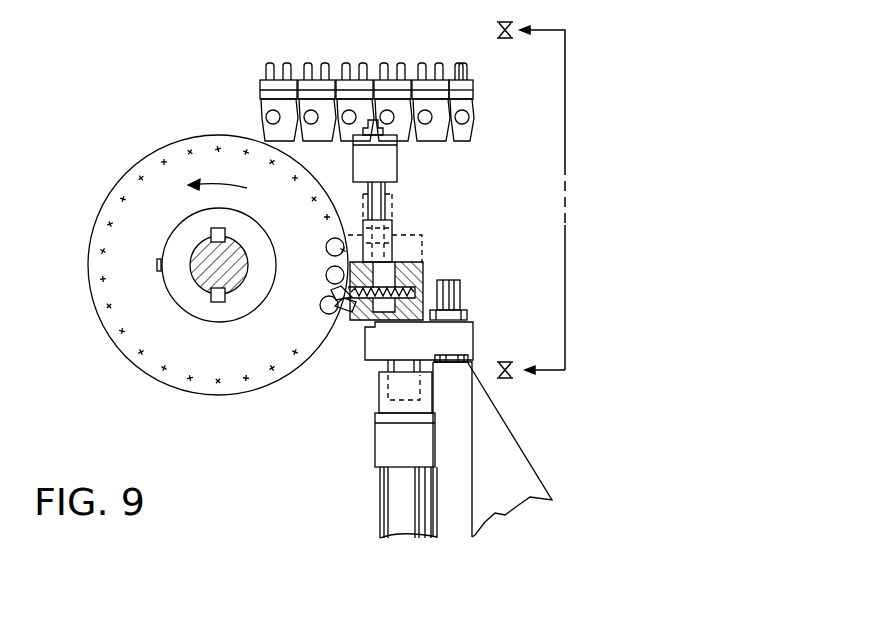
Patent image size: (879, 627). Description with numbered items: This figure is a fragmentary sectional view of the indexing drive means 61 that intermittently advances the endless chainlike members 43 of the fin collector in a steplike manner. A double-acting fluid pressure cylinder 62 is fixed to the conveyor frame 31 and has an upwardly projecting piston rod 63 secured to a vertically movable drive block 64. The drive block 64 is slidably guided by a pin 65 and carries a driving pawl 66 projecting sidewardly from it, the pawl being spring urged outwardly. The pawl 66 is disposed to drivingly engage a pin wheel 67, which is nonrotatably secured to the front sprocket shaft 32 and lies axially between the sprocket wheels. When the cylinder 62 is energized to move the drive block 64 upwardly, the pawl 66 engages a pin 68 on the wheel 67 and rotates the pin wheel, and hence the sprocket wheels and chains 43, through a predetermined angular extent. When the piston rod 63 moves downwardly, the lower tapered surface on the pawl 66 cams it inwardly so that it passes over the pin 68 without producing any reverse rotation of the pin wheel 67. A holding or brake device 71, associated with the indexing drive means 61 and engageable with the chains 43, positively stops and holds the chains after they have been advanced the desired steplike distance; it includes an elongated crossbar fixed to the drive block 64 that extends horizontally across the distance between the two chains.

The frame 31 is at (518, 455).
The front sprocket shaft 32 is at (207, 272).
The endless chainlike member 43 is at (282, 57).
The indexing drive means 61 is at (330, 447).
The double-acting fluid pressure cylinder 62 is at (402, 503).
The piston rod 63 is at (387, 370).
The drive block 64 is at (375, 340).
The pin 65 is at (455, 297).
The driving pawl 66 is at (330, 288).
The pin wheel 67 is at (118, 265).
The pin 68 is at (323, 275).
The holding or brake device 71 is at (444, 171).